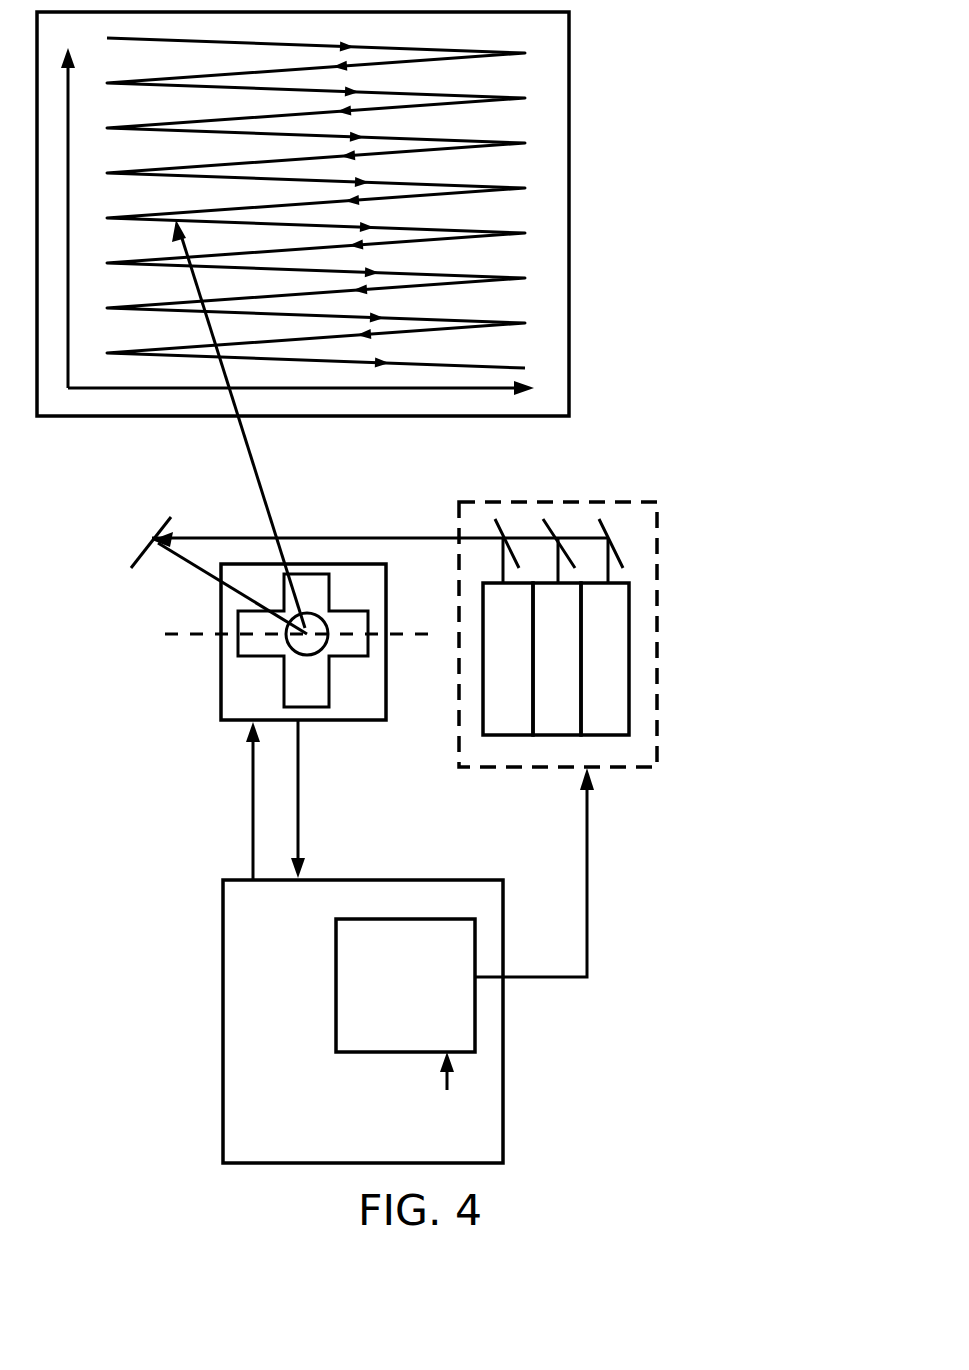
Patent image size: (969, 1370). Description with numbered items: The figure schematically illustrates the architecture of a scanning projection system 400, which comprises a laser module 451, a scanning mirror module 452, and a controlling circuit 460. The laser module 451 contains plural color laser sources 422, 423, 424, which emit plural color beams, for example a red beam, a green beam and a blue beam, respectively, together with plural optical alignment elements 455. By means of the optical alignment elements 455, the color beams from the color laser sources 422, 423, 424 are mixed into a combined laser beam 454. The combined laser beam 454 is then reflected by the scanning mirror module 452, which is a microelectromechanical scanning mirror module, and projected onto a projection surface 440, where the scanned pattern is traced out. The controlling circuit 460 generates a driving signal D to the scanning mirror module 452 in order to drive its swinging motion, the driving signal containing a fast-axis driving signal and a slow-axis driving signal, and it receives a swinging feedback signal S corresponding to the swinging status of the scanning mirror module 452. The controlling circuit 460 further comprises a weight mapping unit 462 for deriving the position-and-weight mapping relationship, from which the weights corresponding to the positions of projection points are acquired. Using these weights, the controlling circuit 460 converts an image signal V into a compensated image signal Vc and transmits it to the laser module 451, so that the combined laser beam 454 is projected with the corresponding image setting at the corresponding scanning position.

The scanning projection system 400 is at (638, 252).
The projection surface 440 is at (565, 122).
The laser module 451 is at (657, 580).
The scanning mirror module 452 is at (386, 594).
The combined laser beam 454 is at (315, 537).
The optical alignment elements 455 is at (495, 519).
The color laser source 422 is at (600, 737).
The color laser source 423 is at (556, 737).
The color laser source 424 is at (502, 737).
The controlling circuit 460 is at (398, 1024).
The weight mapping unit 462 is at (335, 968).